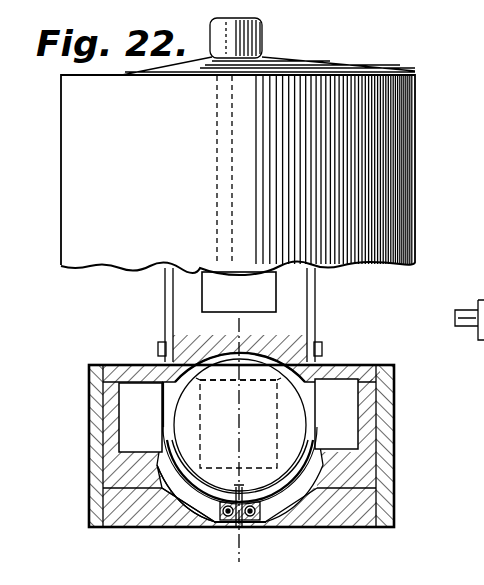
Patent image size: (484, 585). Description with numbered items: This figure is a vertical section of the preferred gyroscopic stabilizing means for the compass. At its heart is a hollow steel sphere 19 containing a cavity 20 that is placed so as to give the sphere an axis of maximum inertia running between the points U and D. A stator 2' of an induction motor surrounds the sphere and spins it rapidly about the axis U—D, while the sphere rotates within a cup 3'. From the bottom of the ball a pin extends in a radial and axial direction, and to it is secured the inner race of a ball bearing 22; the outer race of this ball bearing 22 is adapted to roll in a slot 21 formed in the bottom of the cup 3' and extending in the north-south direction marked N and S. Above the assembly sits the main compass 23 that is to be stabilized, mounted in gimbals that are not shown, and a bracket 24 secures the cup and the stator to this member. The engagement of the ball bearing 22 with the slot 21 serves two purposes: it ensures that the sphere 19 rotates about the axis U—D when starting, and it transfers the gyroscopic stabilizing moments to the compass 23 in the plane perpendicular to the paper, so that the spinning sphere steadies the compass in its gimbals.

The hollow steel sphere 19 is at (246, 392).
The cavity 20 is at (240, 425).
The slot 21 is at (182, 493).
The ball bearing 22 is at (200, 542).
The main compass 23 is at (239, 292).
The bracket 24 is at (165, 293).
The stator of an induction motor 2' is at (241, 431).
The cup 3' is at (277, 532).
The north direction N is at (55, 292).
The south direction S is at (413, 283).
The upper end of spin axis U is at (238, 322).
The lower end of spin axis D is at (239, 527).